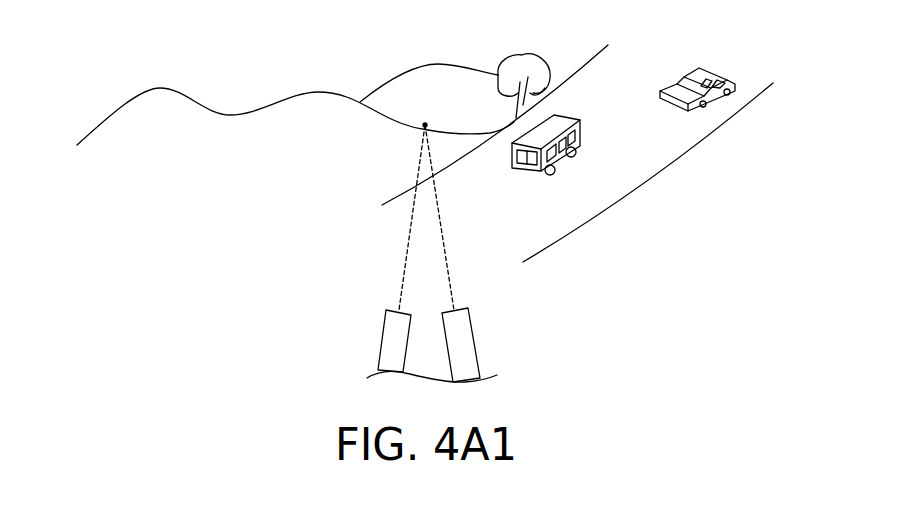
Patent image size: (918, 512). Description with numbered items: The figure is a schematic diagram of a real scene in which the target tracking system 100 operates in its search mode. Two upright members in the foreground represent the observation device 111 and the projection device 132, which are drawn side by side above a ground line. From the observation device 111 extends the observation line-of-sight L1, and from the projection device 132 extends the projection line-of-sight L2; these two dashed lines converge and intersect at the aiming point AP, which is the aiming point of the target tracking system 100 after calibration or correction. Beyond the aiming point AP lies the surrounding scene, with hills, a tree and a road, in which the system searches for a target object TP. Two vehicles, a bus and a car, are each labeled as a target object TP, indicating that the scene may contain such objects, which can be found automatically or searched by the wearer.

The aiming point AP is at (427, 123).
The target object TP is at (582, 135).
The observation line-of-sight L1 is at (442, 217).
The projection line-of-sight L2 is at (406, 259).
The target tracking system 100 is at (545, 306).
The projection device 132 is at (382, 342).
The observation device 111 is at (474, 343).